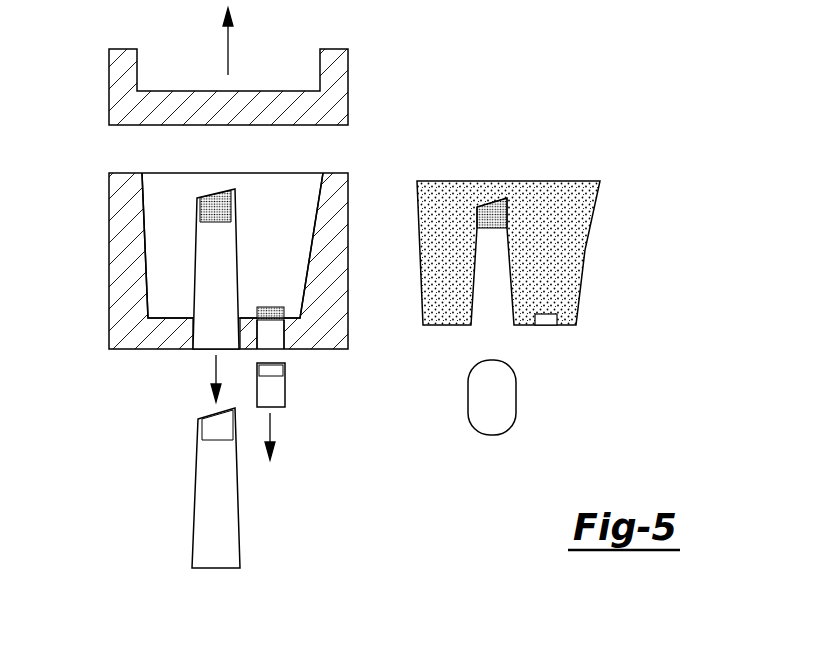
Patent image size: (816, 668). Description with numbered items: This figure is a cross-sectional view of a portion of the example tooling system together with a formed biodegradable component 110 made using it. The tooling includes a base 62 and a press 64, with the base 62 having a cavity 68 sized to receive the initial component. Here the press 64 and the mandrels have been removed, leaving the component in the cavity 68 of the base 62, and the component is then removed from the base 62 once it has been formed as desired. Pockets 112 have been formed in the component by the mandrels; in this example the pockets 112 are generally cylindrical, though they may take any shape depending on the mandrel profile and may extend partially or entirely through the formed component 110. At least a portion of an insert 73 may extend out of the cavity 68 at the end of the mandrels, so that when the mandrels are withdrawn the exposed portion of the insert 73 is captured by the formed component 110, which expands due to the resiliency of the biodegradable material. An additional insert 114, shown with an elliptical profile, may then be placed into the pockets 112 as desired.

The base 62 is at (322, 284).
The press 64 is at (348, 68).
The cavity 68 is at (146, 246).
The insert 73 is at (272, 317).
The formed component 110 is at (544, 190).
The pockets 112 is at (202, 352).
The additional insert 114 is at (517, 398).